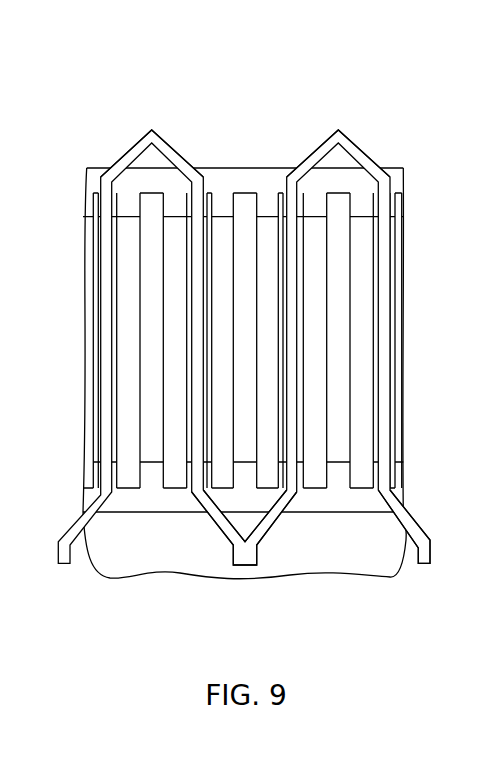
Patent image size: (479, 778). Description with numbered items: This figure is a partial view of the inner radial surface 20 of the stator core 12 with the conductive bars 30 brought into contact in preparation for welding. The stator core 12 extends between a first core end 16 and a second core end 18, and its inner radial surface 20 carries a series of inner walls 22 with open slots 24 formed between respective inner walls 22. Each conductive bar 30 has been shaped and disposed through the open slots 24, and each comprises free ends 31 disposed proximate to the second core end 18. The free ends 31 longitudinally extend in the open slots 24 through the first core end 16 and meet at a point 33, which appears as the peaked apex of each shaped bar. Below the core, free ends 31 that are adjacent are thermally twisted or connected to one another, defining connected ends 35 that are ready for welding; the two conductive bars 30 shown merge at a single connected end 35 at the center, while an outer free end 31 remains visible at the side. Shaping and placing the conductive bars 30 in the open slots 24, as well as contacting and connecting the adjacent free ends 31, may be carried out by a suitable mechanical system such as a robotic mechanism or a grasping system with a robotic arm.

The stator core 12 is at (118, 58).
The first core end 16 is at (225, 168).
The second core end 18 is at (138, 513).
The inner radial surface 20 is at (222, 216).
The inner walls 22 is at (126, 207).
The open slots 24 is at (147, 235).
The conductive bars 30 is at (137, 138).
The free ends 31 is at (425, 565).
The point 33 is at (152, 128).
The connected ends 35 is at (243, 566).